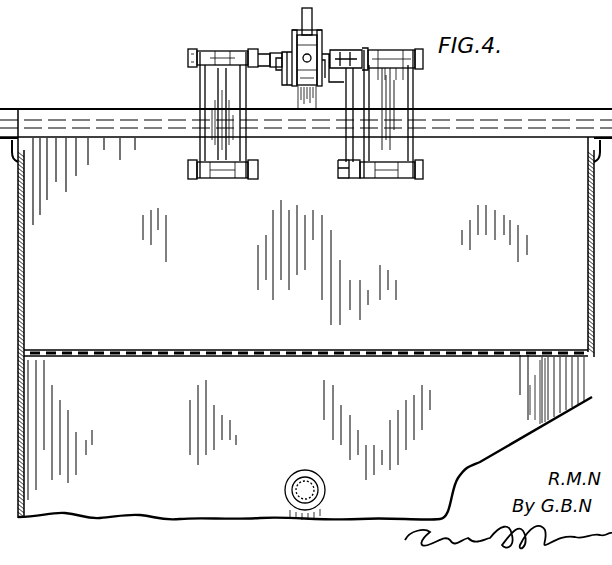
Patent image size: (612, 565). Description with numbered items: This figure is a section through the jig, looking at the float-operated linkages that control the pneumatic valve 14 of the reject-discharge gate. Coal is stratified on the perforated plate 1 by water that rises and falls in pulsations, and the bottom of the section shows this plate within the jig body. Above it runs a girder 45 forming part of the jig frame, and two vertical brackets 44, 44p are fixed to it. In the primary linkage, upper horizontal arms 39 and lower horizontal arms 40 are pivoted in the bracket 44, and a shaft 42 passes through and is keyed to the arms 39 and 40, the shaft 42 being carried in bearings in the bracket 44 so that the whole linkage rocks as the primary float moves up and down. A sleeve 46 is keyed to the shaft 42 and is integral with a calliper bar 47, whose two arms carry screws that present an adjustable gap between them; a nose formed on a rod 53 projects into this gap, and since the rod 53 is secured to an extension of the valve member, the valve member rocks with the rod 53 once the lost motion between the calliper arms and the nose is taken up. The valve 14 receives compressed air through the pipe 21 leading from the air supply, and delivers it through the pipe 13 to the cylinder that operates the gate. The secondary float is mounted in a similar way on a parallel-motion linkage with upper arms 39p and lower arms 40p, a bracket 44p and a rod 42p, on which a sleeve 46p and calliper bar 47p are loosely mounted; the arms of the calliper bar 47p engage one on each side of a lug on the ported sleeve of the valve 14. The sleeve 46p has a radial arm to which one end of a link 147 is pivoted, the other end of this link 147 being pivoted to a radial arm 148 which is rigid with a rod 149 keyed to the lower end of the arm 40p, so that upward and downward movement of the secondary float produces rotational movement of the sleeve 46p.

The perforated plate 1 is at (65, 351).
The pipe 13 is at (295, 53).
The valve 14 is at (296, 31).
The pipe 21 is at (312, 20).
The upper horizontal arms 39 is at (250, 51).
The upper horizontal arms 39p is at (415, 50).
The lower horizontal arms 40 is at (252, 179).
The lower horizontal arms 40p is at (414, 178).
The shaft 42 is at (224, 66).
The rod 42p is at (346, 82).
The vertical bracket 44 is at (200, 96).
The bracket 44p is at (413, 97).
The girder 45 is at (519, 116).
The sleeve 46 is at (272, 56).
The sleeve 46p is at (345, 51).
The calliper bar 47 is at (280, 96).
The calliper bar 47p is at (345, 134).
The rod 53 is at (270, 52).
The link 147 is at (348, 152).
The radial arm 148 is at (340, 172).
The rod 149 is at (356, 180).